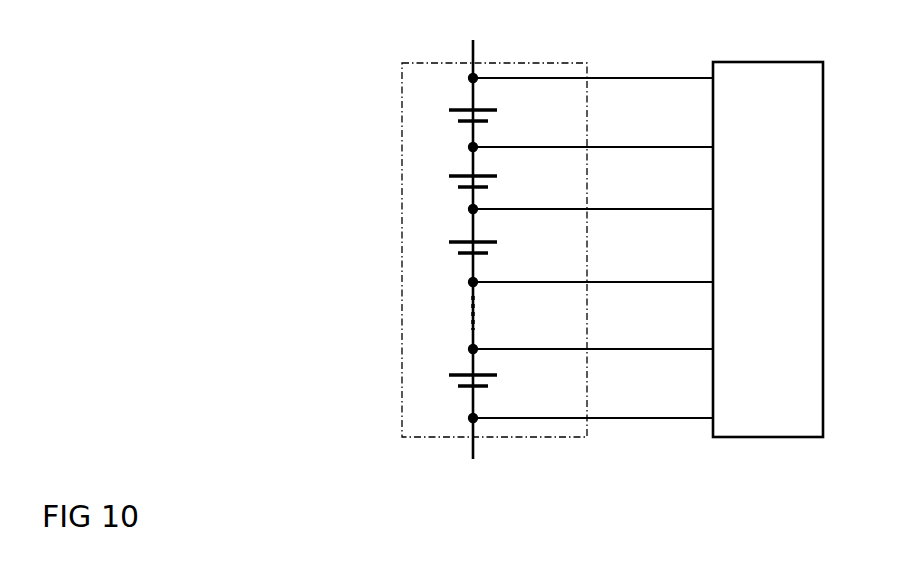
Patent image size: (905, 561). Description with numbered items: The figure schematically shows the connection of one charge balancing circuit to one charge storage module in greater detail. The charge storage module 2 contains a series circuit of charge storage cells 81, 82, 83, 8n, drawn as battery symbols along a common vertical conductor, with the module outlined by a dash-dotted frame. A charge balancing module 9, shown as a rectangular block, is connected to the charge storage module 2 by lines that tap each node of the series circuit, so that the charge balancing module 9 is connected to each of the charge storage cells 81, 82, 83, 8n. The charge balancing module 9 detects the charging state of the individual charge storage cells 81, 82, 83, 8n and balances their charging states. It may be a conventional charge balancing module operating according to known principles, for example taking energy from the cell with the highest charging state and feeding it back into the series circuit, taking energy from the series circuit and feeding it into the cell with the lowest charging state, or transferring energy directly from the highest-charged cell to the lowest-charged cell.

The charge storage module 2 is at (420, 63).
The charge storage cell 81 is at (502, 118).
The charge storage cell 82 is at (502, 184).
The charge storage cell 83 is at (502, 250).
The charge storage cell 8n is at (500, 383).
The charge balancing module 9 is at (770, 62).